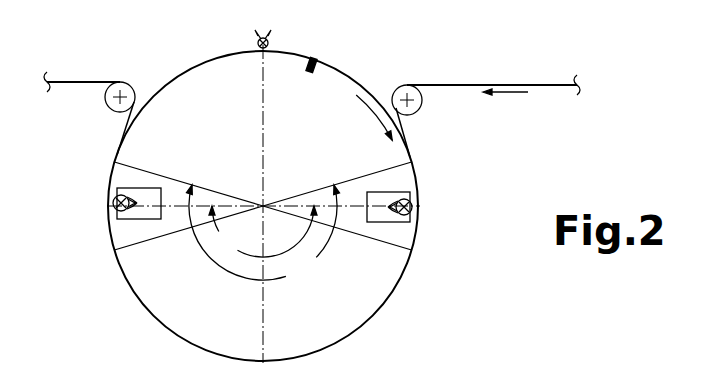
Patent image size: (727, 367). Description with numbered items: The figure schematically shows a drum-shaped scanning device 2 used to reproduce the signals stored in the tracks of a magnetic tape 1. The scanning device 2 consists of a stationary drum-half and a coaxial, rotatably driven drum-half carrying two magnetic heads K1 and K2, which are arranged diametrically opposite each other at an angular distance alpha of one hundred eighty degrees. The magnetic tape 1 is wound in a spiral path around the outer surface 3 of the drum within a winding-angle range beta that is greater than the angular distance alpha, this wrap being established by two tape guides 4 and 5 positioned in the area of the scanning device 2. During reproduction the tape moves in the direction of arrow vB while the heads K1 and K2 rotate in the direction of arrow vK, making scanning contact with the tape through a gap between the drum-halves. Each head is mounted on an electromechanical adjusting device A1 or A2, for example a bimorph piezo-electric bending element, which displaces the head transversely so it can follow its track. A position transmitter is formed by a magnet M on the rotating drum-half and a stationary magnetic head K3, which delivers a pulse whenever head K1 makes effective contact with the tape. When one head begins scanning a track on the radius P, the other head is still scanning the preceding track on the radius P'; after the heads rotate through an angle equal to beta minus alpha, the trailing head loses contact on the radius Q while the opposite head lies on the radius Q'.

The magnetic tape 1 is at (542, 85).
The drum-shaped scanning device 2 is at (182, 63).
The outer surface 3 is at (363, 88).
The tape guide 4 is at (420, 104).
The tape guide 5 is at (108, 105).
The magnetic head K3 is at (269, 37).
The magnet M is at (320, 69).
The direction of rotation of the magnetic heads vK is at (372, 112).
The direction of tape movement vB is at (503, 93).
The radius Q is at (188, 169).
The radius Q' is at (337, 245).
The radius P is at (337, 175).
The radius P' is at (188, 244).
The angular distance alpha is at (263, 231).
The winding-angle range beta is at (263, 234).
The electromechanical adjusting device A1 is at (378, 195).
The electromechanical adjusting device A2 is at (145, 192).
The magnetic head K1 is at (411, 213).
The magnetic head K2 is at (114, 208).